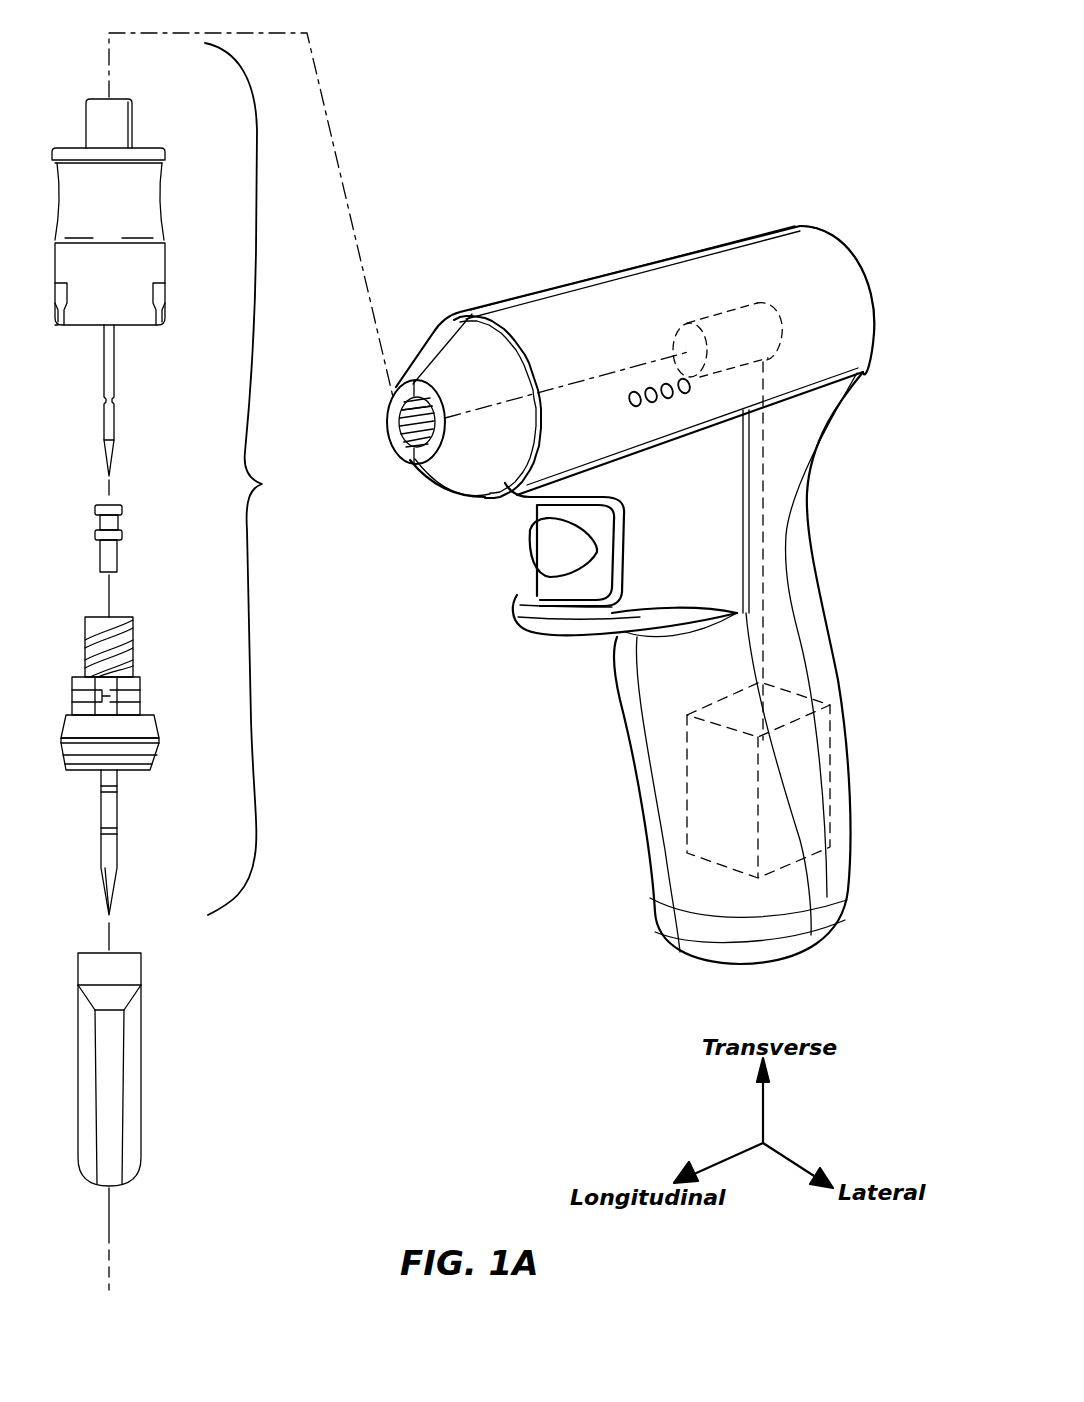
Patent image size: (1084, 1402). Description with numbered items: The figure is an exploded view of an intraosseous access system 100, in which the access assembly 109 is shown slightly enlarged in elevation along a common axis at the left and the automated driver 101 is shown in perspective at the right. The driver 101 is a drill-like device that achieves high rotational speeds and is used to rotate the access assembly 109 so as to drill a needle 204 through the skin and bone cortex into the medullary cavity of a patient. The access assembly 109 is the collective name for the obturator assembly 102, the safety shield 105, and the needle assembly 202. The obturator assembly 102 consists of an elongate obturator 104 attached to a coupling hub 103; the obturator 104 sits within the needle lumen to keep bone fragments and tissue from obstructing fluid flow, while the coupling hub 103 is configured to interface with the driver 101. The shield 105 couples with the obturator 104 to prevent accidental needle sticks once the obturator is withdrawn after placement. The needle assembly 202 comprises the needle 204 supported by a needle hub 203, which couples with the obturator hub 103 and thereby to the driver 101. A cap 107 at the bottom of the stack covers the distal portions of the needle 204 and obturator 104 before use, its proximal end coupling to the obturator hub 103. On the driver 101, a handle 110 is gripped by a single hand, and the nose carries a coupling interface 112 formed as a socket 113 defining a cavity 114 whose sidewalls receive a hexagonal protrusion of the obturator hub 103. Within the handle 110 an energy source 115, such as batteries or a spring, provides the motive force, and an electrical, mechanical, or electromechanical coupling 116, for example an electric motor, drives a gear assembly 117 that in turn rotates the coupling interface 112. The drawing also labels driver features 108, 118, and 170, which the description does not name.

The intraosseous access system 100 is at (615, 513).
The driver 101 is at (616, 513).
The obturator assembly 102 is at (170, 130).
The coupling hub 103 is at (147, 258).
The obturator 104 is at (112, 380).
The safety shield 105 is at (122, 520).
The cap 107 is at (130, 975).
The housing 108 is at (782, 255).
The access assembly 109 is at (263, 479).
The handle 110 is at (652, 806).
The coupling interface 112 is at (390, 452).
The socket 113 is at (412, 448).
The cavity 114 is at (392, 428).
The energy source 115 is at (830, 795).
The coupling 116 is at (763, 483).
The gear assembly 117 is at (715, 316).
The barrel 118 is at (560, 382).
The indicator lights 170 is at (710, 390).
The needle assembly 202 is at (152, 652).
The needle hub 203 is at (150, 728).
The needle 204 is at (112, 854).